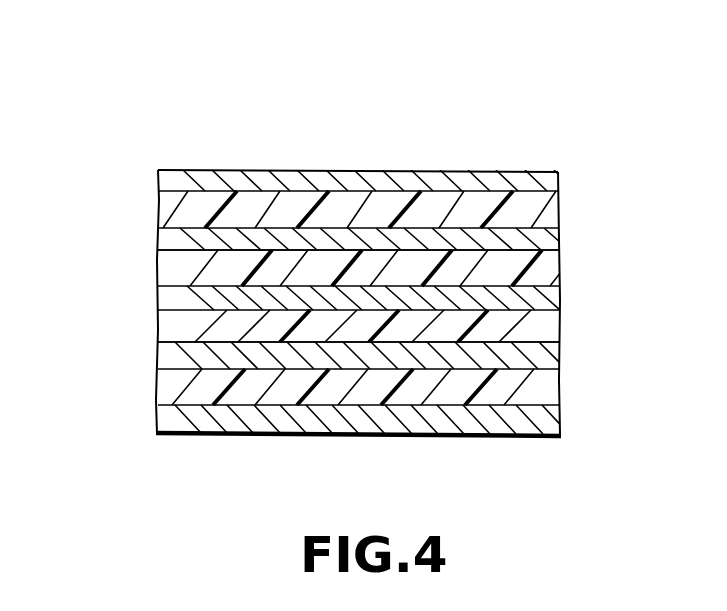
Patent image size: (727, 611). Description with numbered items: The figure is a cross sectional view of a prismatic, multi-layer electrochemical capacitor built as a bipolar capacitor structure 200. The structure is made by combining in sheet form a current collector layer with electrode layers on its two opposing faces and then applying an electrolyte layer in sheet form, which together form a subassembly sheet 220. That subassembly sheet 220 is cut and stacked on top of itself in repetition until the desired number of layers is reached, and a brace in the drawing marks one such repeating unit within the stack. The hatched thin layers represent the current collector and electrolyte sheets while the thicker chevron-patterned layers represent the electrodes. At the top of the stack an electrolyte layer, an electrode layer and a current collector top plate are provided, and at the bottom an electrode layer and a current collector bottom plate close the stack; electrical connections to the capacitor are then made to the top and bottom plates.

The bipolar capacitor structure 200 is at (490, 128).
The subassembly sheet 220 is at (130, 247).